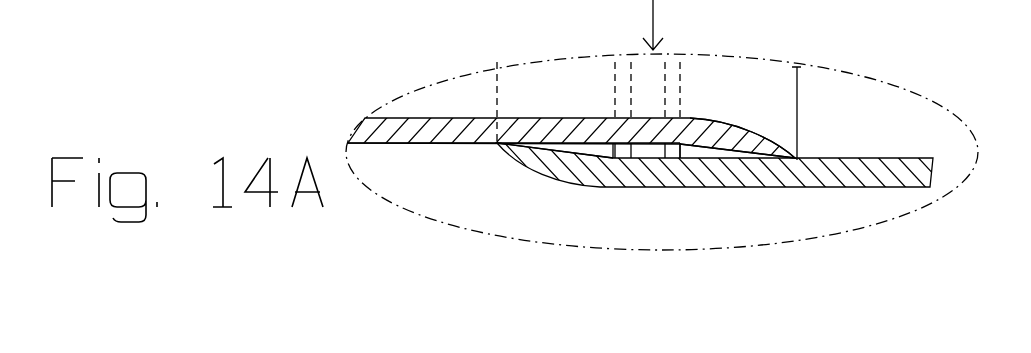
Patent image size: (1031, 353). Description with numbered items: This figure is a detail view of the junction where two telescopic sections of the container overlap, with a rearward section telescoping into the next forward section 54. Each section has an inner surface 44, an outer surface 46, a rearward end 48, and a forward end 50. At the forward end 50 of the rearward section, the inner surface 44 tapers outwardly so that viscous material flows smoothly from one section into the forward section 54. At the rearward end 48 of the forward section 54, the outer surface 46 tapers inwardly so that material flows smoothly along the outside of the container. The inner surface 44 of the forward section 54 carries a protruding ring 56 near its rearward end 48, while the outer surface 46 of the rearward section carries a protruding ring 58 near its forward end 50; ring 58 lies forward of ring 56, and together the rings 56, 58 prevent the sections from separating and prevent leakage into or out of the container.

The inner surface 44 is at (459, 118).
The outer surface 46 is at (427, 145).
The rearward end 48 is at (531, 146).
The forward end 50 is at (784, 137).
The forward section 54 is at (882, 160).
The protruding ring 56 is at (620, 163).
The protruding ring 58 is at (672, 160).